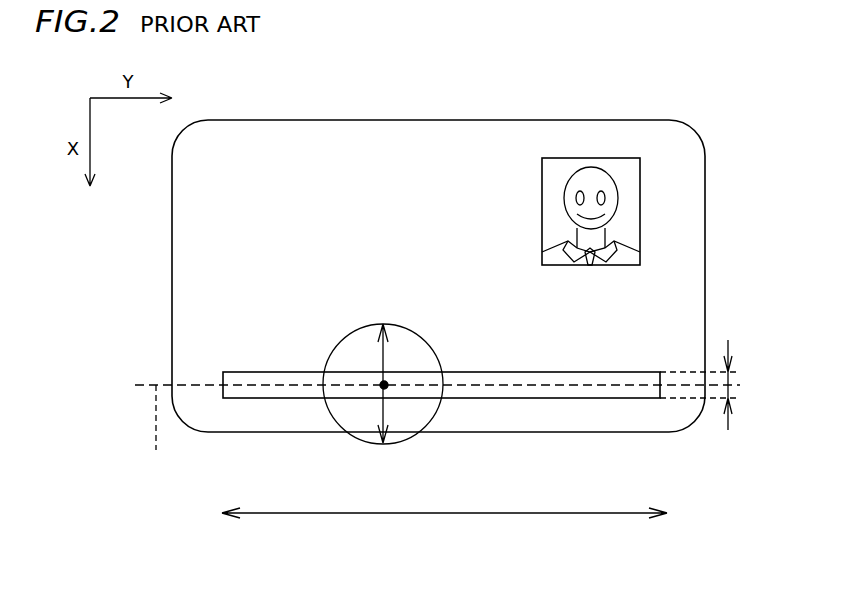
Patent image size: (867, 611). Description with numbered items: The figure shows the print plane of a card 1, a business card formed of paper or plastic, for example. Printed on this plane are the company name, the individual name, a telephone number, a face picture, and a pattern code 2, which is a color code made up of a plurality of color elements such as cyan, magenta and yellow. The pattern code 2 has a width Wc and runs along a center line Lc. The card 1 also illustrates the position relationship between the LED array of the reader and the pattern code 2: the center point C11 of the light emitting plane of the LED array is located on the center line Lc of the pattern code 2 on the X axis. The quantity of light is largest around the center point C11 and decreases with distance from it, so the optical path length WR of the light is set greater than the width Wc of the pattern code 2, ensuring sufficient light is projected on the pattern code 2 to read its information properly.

The card 1 is at (440, 120).
The pattern code 2 is at (577, 398).
The center line Lc is at (156, 431).
The optical path length WR is at (385, 410).
The center point C11 is at (386, 388).
The width Wc is at (751, 385).